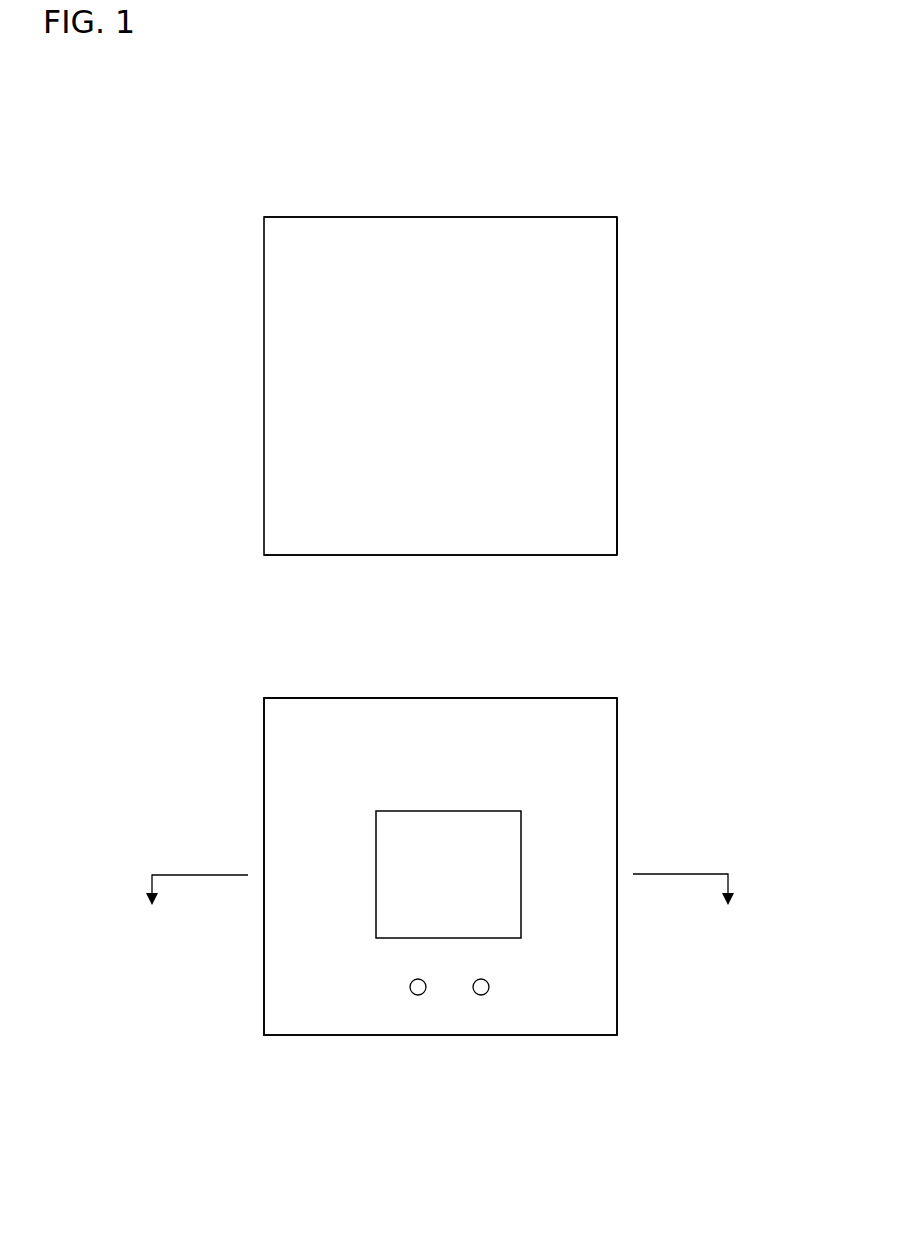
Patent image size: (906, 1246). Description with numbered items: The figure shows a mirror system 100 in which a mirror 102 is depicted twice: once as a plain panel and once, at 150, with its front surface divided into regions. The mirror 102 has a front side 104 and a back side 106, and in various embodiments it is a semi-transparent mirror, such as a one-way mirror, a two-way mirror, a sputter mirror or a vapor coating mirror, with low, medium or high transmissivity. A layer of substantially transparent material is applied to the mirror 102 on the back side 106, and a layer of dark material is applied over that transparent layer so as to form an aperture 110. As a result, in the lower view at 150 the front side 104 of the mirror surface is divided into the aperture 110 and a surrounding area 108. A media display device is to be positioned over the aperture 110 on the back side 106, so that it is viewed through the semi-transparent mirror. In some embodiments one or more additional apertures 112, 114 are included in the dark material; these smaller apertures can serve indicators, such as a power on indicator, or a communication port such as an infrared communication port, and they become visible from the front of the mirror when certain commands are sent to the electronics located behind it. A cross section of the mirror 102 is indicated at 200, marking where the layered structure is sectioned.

The mirror system 100 is at (636, 197).
The mirror 102 is at (440, 217).
The front side 104 is at (585, 291).
The back side 106 is at (637, 530).
The area 108 is at (298, 748).
The aperture 110 is at (485, 892).
The additional aperture 112 is at (414, 995).
The additional aperture 114 is at (481, 995).
The mirror view showing aperture and area 150 is at (669, 682).
The cross section 200 is at (441, 907).